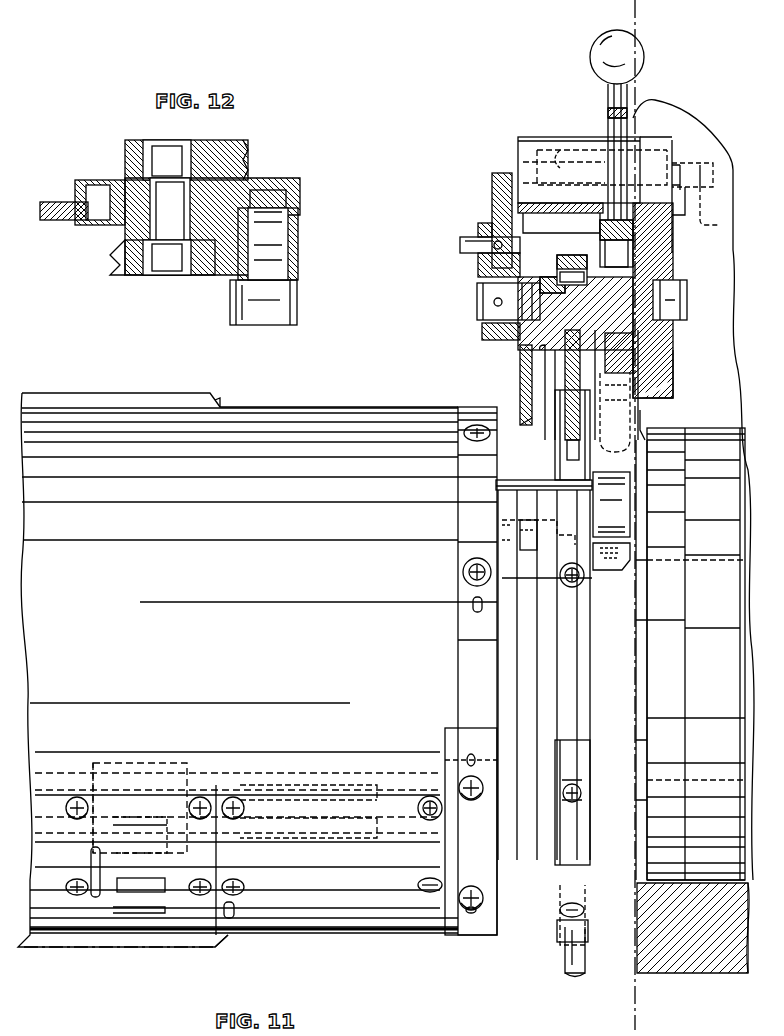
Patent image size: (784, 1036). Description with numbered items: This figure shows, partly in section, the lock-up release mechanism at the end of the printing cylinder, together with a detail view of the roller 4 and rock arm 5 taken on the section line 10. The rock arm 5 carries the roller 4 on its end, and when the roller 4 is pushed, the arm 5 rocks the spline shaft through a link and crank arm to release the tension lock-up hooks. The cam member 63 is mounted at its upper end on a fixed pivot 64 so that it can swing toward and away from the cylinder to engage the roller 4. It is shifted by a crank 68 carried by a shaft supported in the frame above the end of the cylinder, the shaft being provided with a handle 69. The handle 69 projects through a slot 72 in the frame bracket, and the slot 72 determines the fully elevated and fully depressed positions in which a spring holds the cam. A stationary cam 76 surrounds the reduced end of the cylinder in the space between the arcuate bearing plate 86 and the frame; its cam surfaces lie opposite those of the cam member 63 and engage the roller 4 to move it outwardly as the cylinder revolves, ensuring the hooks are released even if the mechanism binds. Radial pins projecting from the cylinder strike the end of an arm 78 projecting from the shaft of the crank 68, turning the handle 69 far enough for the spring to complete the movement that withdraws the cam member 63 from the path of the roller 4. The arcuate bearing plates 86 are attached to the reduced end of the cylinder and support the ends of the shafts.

In FIG. 12, the roller 4 is at (273, 313).
In FIG. 11, the roller 4 is at (625, 508).
In FIG. 12, the rock arm 5 is at (297, 222).
In FIG. 11, the rock arm 5 is at (540, 488).
In FIG. 11, the section line 10 is at (647, 14).
In FIG. 11, the cam member 63 is at (636, 432).
In FIG. 11, the fixed pivot 64 is at (696, 205).
In FIG. 11, the crank 68 is at (645, 375).
In FIG. 11, the handle 69 is at (608, 99).
In FIG. 11, the slot 72 is at (633, 115).
In FIG. 11, the stationary cam 76 is at (630, 640).
In FIG. 11, the arm 78 is at (568, 428).
In FIG. 11, the arcuate bearing plates 86 is at (565, 847).